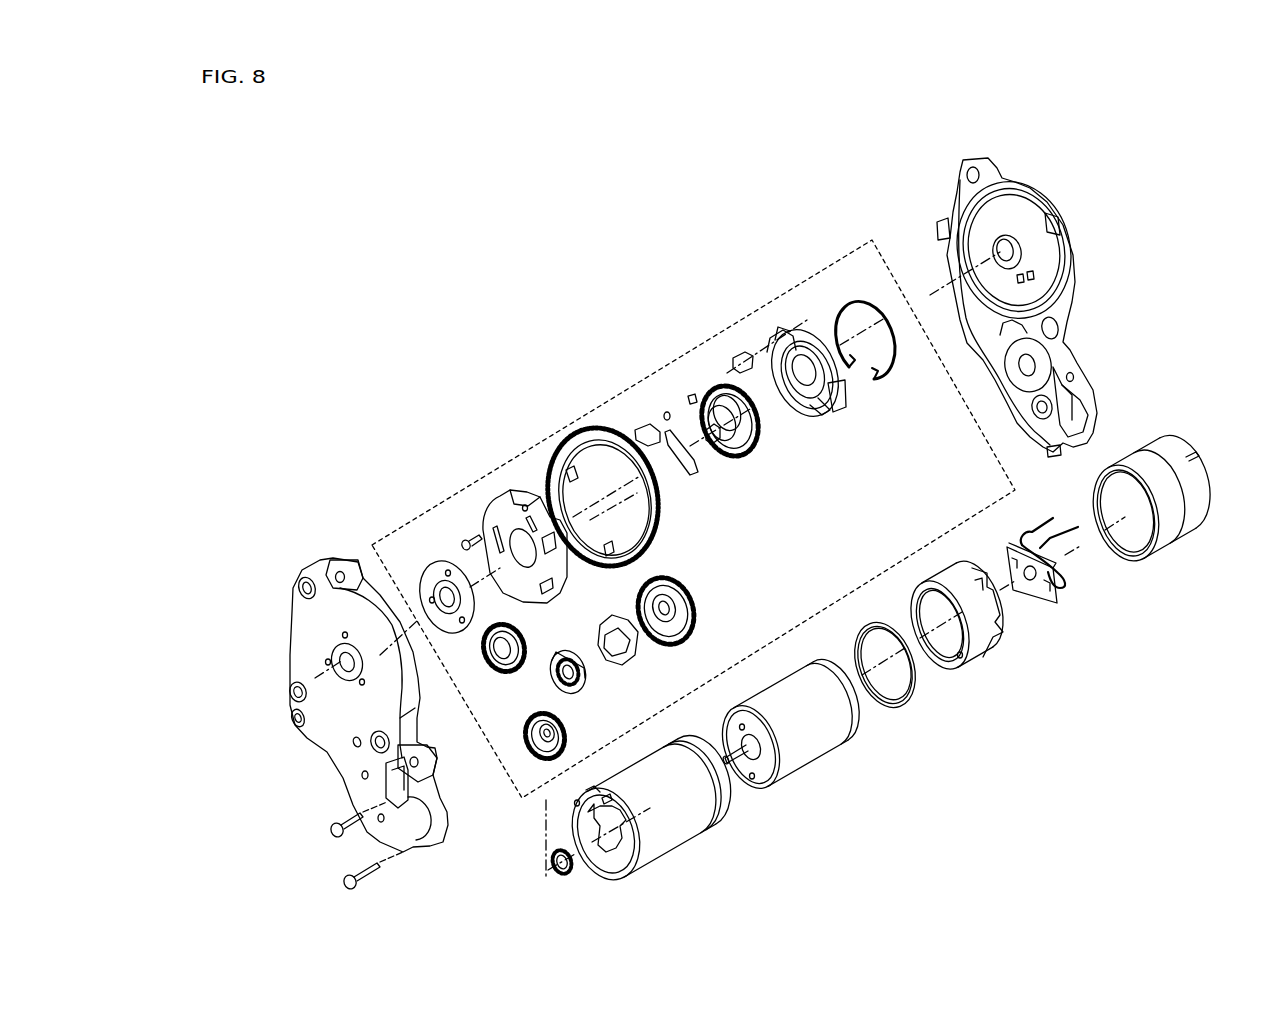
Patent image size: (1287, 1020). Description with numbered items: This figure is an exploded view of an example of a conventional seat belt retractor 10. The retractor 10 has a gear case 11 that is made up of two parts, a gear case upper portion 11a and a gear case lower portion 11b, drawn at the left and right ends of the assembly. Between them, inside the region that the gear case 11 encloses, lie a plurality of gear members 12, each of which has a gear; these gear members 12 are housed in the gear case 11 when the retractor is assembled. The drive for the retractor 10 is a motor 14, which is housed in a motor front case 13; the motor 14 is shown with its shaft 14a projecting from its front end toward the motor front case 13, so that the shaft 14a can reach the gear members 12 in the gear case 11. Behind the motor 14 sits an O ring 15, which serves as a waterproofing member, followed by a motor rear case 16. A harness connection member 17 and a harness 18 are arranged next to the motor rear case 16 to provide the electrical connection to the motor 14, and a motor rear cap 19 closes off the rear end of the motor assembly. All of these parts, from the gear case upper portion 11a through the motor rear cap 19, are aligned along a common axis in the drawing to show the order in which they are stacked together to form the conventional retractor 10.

The seat belt retractor 10 is at (636, 186).
The gear case 11 is at (496, 232).
The gear case upper portion 11a is at (315, 557).
The gear case lower portion 11b is at (963, 160).
The gear members 12 is at (776, 297).
The motor front case 13 is at (672, 852).
The motor 14 is at (813, 754).
The motor shaft 14a is at (740, 780).
The O ring 15 is at (909, 700).
The motor rear case 16 is at (968, 667).
The harness connection member 17 is at (1055, 605).
The harness 18 is at (1073, 578).
The motor rear cap 19 is at (1160, 556).